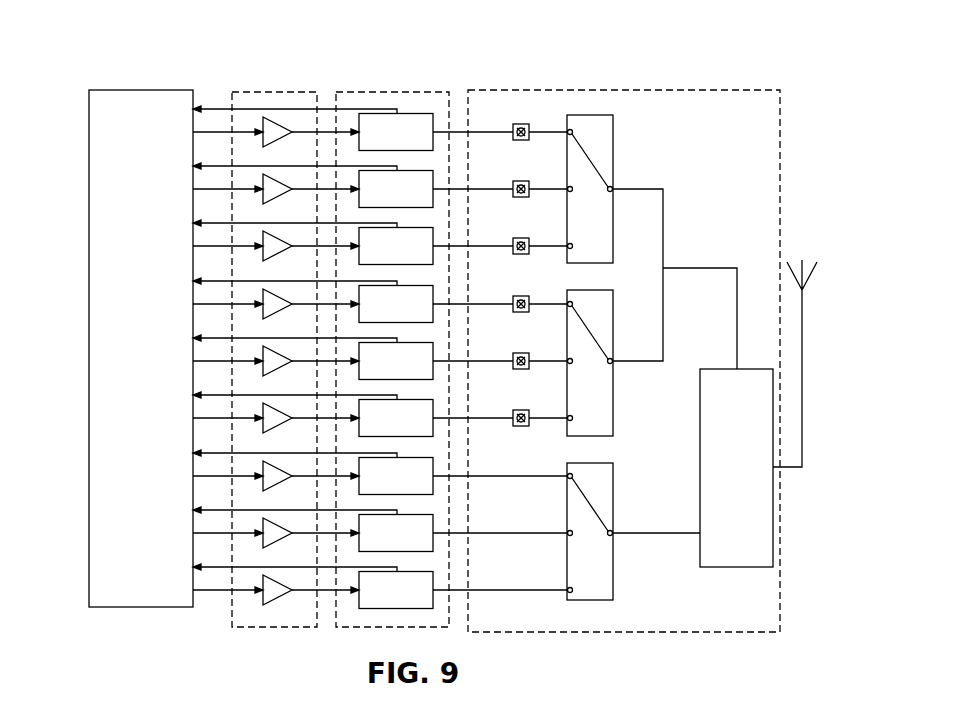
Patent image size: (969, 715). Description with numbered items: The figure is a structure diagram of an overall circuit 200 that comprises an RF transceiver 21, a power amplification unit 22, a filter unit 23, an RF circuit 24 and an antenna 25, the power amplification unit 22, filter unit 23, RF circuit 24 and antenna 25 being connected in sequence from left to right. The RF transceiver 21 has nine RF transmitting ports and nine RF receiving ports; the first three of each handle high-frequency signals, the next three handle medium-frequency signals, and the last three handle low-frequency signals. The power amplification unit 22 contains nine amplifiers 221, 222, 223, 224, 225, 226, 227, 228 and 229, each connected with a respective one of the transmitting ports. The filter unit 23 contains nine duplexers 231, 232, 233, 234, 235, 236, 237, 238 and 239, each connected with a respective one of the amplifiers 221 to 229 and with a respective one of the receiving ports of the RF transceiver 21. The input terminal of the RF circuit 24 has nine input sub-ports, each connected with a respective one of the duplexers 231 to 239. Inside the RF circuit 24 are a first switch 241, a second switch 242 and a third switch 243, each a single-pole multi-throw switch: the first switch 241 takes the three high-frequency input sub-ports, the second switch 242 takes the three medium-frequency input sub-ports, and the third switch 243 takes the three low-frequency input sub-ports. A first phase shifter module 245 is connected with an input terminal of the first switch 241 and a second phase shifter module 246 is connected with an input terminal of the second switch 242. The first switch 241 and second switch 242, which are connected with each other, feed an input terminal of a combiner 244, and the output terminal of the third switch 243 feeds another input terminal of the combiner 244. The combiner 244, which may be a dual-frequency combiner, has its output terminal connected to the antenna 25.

The overall circuit 200 is at (80, 287).
The RF transceiver 21 is at (130, 90).
The power amplification unit 22 is at (253, 92).
The filter unit 23 is at (357, 92).
The RF circuit 24 is at (602, 90).
The antenna 25 is at (795, 262).
The amplifier 221 is at (276, 141).
The amplifier 222 is at (276, 198).
The amplifier 223 is at (276, 255).
The amplifier 224 is at (276, 313).
The amplifier 225 is at (276, 370).
The amplifier 226 is at (276, 427).
The amplifier 227 is at (276, 485).
The amplifier 228 is at (276, 542).
The amplifier 229 is at (276, 599).
The duplexer 231 is at (400, 151).
The duplexer 232 is at (400, 208).
The duplexer 233 is at (400, 265).
The duplexer 234 is at (400, 323).
The duplexer 235 is at (400, 380).
The duplexer 236 is at (400, 437).
The duplexer 237 is at (400, 495).
The duplexer 238 is at (400, 552).
The duplexer 239 is at (400, 609).
The first switch 241 is at (613, 147).
The second switch 242 is at (613, 320).
The third switch 243 is at (613, 493).
The combiner 244 is at (700, 515).
The first phase shifter module 245 is at (509, 178).
The second phase shifter module 246 is at (509, 350).